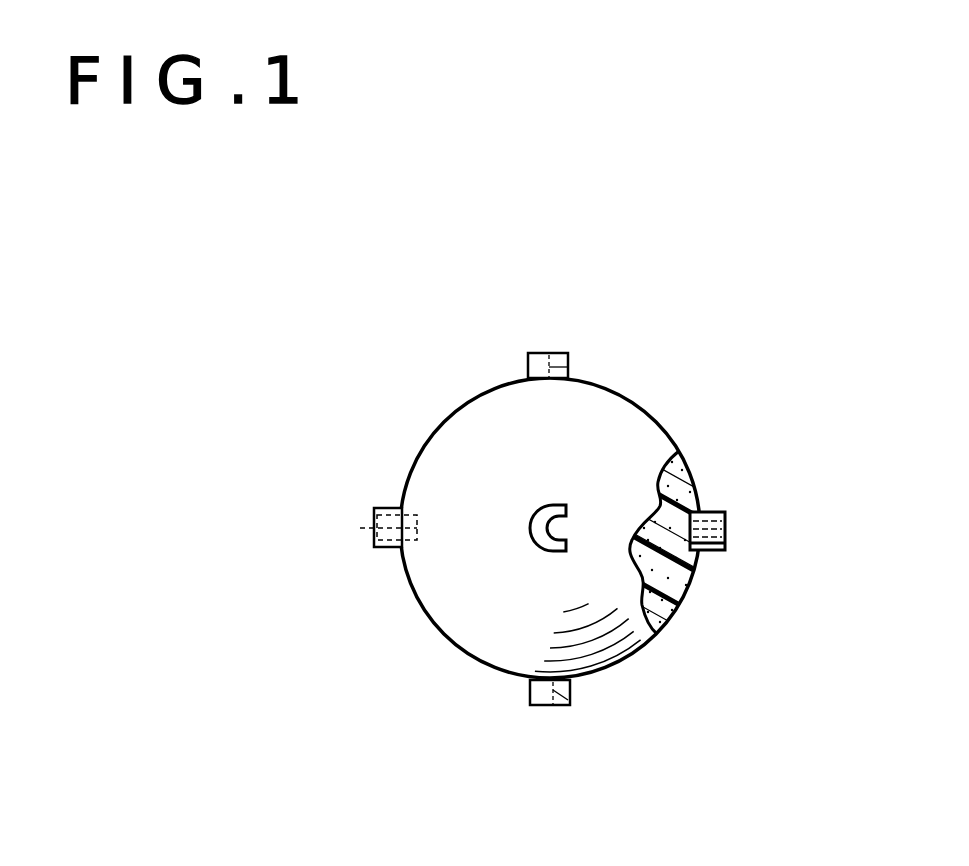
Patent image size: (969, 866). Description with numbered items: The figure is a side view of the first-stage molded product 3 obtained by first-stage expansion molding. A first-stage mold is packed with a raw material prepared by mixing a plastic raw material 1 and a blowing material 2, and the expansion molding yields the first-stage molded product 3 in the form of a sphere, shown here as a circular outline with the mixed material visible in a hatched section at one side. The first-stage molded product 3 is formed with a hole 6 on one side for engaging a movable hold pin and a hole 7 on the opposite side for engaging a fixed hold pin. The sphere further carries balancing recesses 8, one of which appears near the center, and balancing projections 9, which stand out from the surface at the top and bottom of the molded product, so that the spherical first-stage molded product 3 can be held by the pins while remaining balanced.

The plastic raw material 1 is at (700, 567).
The blowing material 2 is at (690, 613).
The first-stage molded product 3 is at (440, 655).
The hole for engaging movable hold pin 6 is at (372, 528).
The hole for engaging fixed hold pin 7 is at (725, 533).
The balancing recess 8 is at (560, 523).
The balancing projection 9 is at (542, 507).